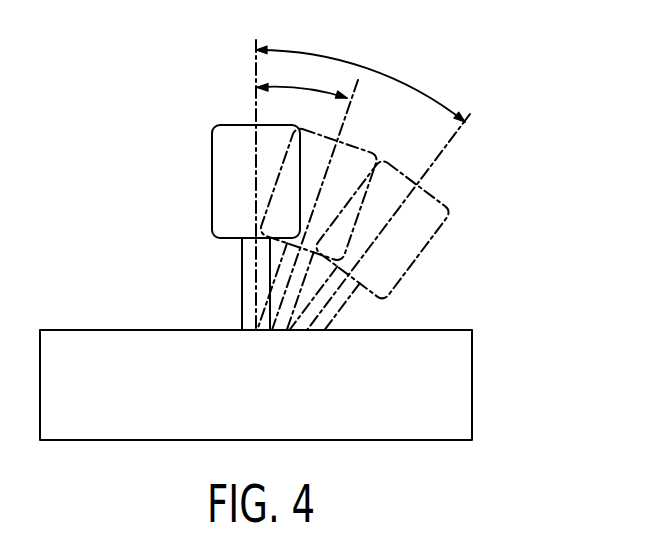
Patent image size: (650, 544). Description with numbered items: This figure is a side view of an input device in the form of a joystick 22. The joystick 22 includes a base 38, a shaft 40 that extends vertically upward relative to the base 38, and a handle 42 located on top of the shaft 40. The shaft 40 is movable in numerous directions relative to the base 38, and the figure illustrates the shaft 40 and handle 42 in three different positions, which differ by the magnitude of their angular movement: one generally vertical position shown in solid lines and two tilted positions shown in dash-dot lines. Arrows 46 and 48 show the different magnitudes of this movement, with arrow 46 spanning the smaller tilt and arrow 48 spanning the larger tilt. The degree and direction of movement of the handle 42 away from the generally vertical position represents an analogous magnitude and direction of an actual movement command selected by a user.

The joystick 22 is at (428, 53).
The base 38 is at (472, 385).
The shaft 40 is at (240, 287).
The handle 42 is at (210, 183).
The arrow 46 is at (288, 87).
The arrow 48 is at (315, 56).